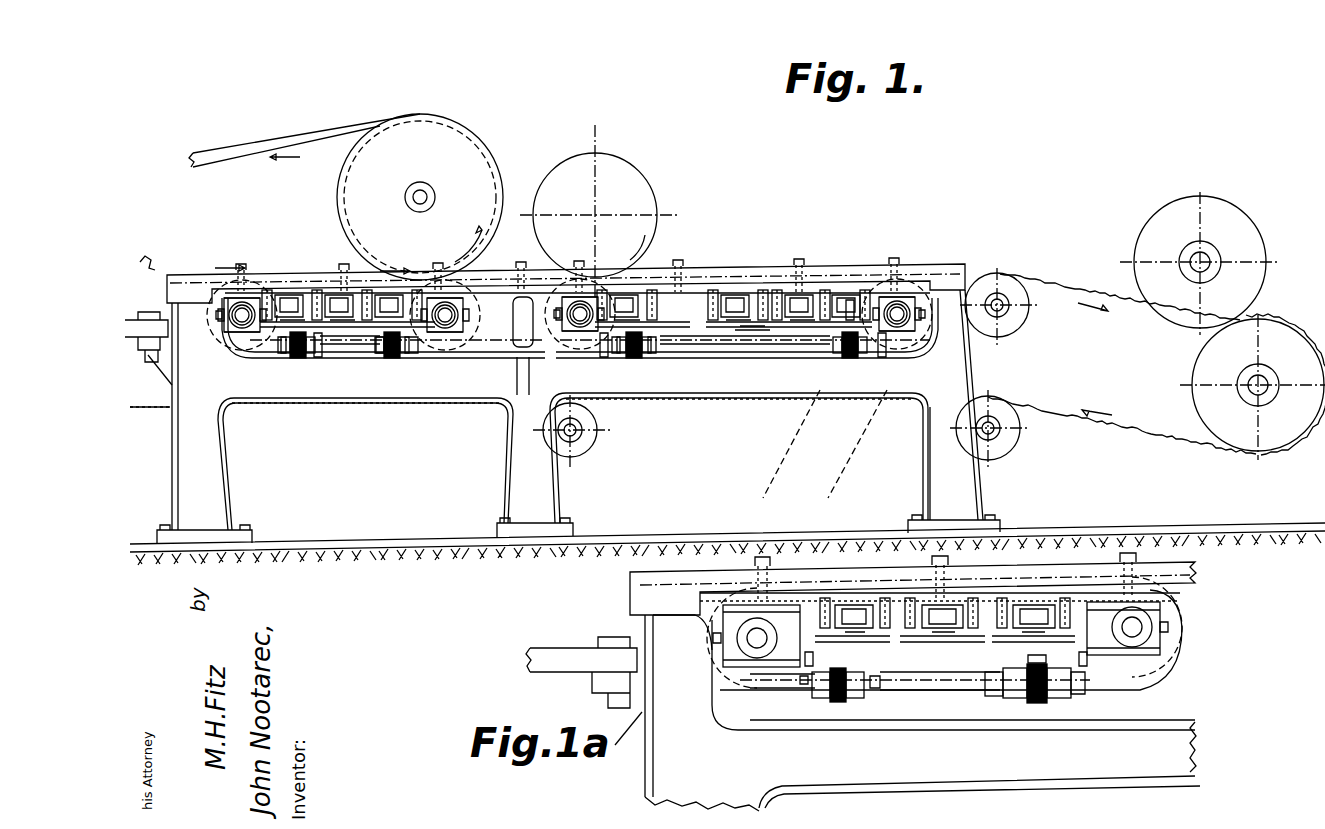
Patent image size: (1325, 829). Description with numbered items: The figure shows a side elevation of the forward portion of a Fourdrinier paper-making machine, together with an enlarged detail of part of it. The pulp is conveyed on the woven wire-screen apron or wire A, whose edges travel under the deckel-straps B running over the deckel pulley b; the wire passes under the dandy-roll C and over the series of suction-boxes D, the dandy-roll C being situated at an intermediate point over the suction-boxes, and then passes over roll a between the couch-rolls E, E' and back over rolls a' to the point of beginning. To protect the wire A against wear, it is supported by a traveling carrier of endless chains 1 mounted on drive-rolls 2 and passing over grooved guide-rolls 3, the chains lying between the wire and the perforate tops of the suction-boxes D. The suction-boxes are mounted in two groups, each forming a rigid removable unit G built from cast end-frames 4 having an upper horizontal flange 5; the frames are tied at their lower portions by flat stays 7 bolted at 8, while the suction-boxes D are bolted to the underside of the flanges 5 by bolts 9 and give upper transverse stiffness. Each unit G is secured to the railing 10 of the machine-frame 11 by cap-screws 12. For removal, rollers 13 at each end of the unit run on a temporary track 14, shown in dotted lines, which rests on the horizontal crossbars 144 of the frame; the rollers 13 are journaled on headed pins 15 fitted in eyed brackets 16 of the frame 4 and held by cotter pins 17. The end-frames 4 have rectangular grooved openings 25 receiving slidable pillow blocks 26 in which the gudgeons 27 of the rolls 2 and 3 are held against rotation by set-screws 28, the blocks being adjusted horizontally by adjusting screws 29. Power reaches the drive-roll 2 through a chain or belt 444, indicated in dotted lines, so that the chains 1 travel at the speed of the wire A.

In FIG. 1, the endless traveling chains 1 is at (832, 258).
In FIG. 1A, the endless traveling chains 1 is at (833, 689).
In FIG. 1, the drive-rolls 2 is at (470, 325).
In FIG. 1A, the drive-rolls 2 is at (969, 632).
In FIG. 1, the grooved guide-rolls 3 is at (222, 318).
In FIG. 1A, the grooved guide-rolls 3 is at (730, 650).
In FIG. 1, the end-frames 4 is at (345, 340).
In FIG. 1A, the end-frames 4 is at (915, 683).
In FIG. 1, the flange 5 is at (368, 291).
In FIG. 1A, the flange 5 is at (790, 605).
In FIG. 1, the stays 7 is at (762, 368).
In FIG. 1A, the stays 7 is at (945, 650).
In FIG. 1, the bolts 8 is at (757, 345).
In FIG. 1A, the bolts 8 is at (948, 650).
In FIG. 1, the bolts 9 is at (360, 320).
In FIG. 1A, the bolts 9 is at (945, 648).
In FIG. 1, the railing 10 is at (500, 280).
In FIG. 1A, the railing 10 is at (913, 588).
In FIG. 1, the machine-frame 11 is at (208, 460).
In FIG. 1A, the machine-frame 11 is at (922, 713).
In FIG. 1, the cap-screws 12 is at (243, 270).
In FIG. 1A, the cap-screws 12 is at (762, 562).
In FIG. 1, the rollers 13 is at (298, 360).
In FIG. 1A, the rollers 13 is at (835, 705).
In FIG. 1, the temporary track 14 is at (408, 353).
In FIG. 1A, the temporary track 14 is at (1082, 738).
In FIG. 1, the headed pins 15 is at (318, 357).
In FIG. 1A, the headed pins 15 is at (990, 672).
In FIG. 1, the eyed brackets 16 is at (284, 353).
In FIG. 1A, the eyed brackets 16 is at (895, 700).
In FIG. 1A, the cotter pins 17 is at (800, 685).
In FIG. 1, the grooved openings 25 is at (245, 330).
In FIG. 1A, the grooved openings 25 is at (810, 665).
In FIG. 1, the pillow blocks 26 is at (235, 318).
In FIG. 1A, the pillow blocks 26 is at (733, 652).
In FIG. 1, the gudgeons 27 is at (240, 322).
In FIG. 1A, the gudgeons 27 is at (757, 638).
In FIG. 1, the set-screws 28 is at (225, 315).
In FIG. 1A, the set-screws 28 is at (720, 638).
In FIG. 1, the adjusting screws 29 is at (850, 300).
In FIG. 1A, the adjusting screws 29 is at (946, 657).
In FIG. 1, the crossbars 144 is at (580, 347).
In FIG. 1A, the crossbars 144 is at (951, 676).
In FIG. 1, the power chain or belt 444 is at (852, 472).
In FIG. 1, the wire A is at (1085, 295).
In FIG. 1, the deckel-straps B is at (495, 165).
In FIG. 1, the deckel pulley b is at (421, 179).
In FIG. 1, the dandy-roll C is at (645, 205).
In FIG. 1, the suction-boxes D is at (345, 300).
In FIG. 1A, the suction-boxes D is at (945, 613).
In FIG. 1, the couch-roll E is at (1200, 259).
In FIG. 1, the bottom couch roll E' is at (1246, 387).
In FIG. 1, the suction-box unit G is at (455, 338).
In FIG. 1A, the suction-box unit G is at (892, 668).
In FIG. 1, the roll a is at (792, 369).
In FIG. 1, the rolls a' is at (1010, 430).